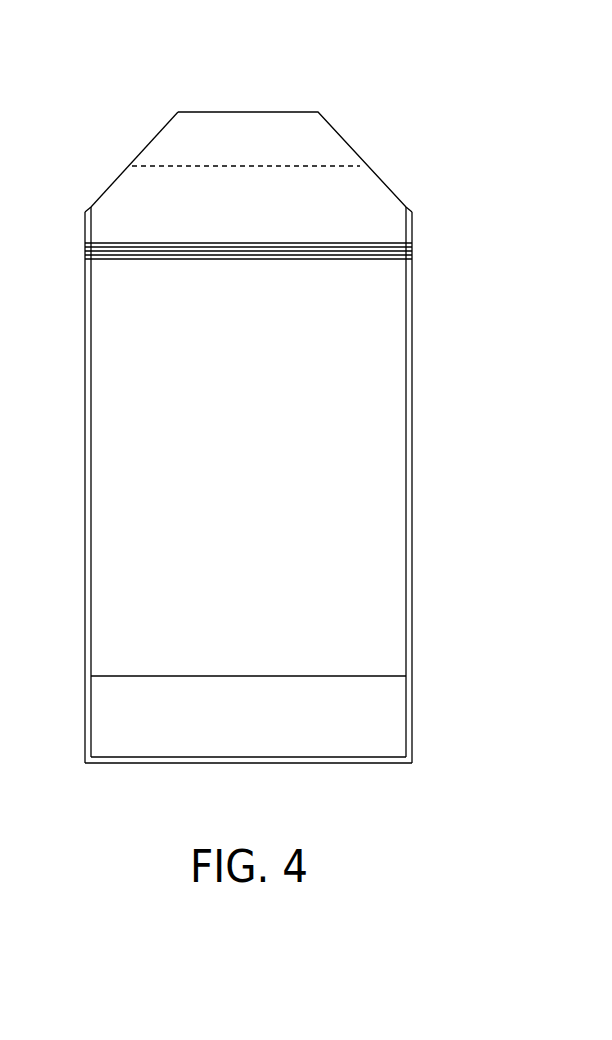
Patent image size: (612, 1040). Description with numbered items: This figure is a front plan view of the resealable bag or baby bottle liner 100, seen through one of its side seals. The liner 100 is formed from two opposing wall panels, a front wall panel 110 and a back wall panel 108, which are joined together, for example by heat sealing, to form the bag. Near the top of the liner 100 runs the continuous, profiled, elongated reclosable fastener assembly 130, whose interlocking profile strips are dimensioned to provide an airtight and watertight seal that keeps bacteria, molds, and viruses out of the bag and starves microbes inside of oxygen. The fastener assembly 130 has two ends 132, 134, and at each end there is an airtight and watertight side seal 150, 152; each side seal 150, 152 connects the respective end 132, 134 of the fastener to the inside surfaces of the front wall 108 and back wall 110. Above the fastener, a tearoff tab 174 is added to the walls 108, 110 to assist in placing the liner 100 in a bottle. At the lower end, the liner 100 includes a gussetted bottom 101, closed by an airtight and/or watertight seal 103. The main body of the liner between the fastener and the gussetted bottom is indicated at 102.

The resealable bag / baby bottle liner 100 is at (247, 92).
The tearoff tab 174 is at (320, 138).
The end of reclosable fastener assembly 134 is at (110, 238).
The reclosable fastener assembly 130 is at (345, 243).
The end of reclosable fastener assembly 132 is at (380, 245).
The side seal 152 is at (85, 255).
The side seal 150 is at (413, 253).
The front wall panel 110 is at (412, 343).
The back wall panel 108 is at (385, 448).
The body panel 102 is at (350, 525).
The seal at gussetted bottom 103 is at (113, 670).
The gussetted bottom 101 is at (362, 720).